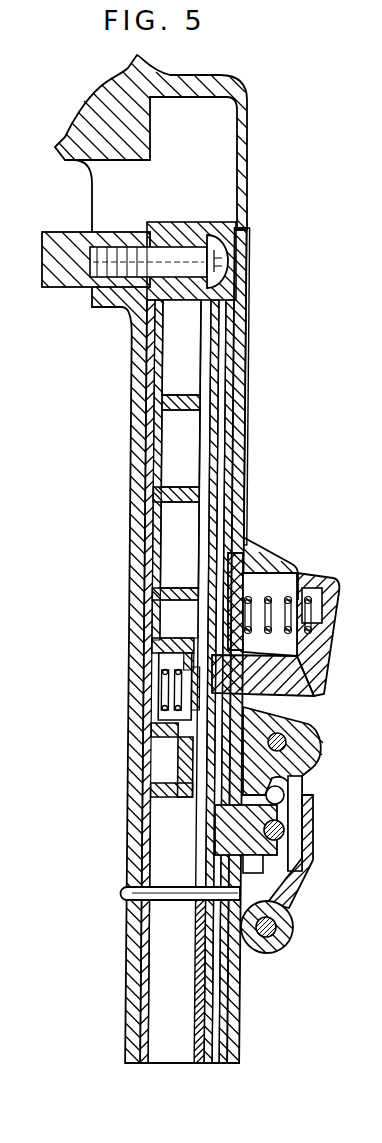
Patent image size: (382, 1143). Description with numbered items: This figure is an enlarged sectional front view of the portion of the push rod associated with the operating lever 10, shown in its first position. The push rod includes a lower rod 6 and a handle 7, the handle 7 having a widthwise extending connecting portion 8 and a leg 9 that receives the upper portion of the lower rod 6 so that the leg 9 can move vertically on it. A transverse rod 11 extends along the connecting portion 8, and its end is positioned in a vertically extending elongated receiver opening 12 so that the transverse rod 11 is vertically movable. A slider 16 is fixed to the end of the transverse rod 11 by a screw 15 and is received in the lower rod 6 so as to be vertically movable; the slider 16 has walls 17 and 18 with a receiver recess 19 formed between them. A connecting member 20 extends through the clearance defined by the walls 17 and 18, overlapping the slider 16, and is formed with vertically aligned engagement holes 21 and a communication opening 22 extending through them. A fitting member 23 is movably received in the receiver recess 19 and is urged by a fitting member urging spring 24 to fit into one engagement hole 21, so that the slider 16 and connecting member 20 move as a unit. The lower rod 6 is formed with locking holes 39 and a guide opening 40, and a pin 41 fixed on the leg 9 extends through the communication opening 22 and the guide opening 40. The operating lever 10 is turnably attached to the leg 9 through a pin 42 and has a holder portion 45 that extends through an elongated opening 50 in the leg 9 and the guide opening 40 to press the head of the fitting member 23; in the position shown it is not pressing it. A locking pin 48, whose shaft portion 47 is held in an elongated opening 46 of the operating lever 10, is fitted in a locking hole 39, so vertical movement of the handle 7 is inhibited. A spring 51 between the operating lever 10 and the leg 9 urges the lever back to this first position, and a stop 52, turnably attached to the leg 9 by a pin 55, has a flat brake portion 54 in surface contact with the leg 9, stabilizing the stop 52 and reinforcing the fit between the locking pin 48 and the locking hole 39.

The lower rod 6 is at (136, 962).
The handle 7 is at (262, 169).
The widthwise extending connecting portion 8 is at (56, 150).
The leg 9 is at (246, 432).
The operating lever 10 is at (319, 713).
The transverse rod 11 is at (64, 289).
The receiver opening 12 is at (103, 192).
The screw 15 is at (180, 256).
The slider 16 is at (165, 400).
The wall 17 is at (238, 612).
The wall 18 is at (190, 767).
The receiver recess 19 is at (160, 718).
The connecting member 20 is at (230, 328).
The engagement hole 21 is at (172, 468).
The communication opening 22 is at (203, 520).
The fitting member 23 is at (182, 658).
The fitting member urging spring 24 is at (165, 686).
The locking hole 39 is at (248, 396).
The guide opening 40 is at (225, 486).
The pin 41 is at (140, 903).
The pin 42 is at (286, 751).
The holder portion 45 is at (322, 686).
The elongated opening 46 is at (303, 806).
The shaft portion 47 is at (303, 831).
The locking pin 48 is at (205, 826).
The elongated opening 50 is at (300, 640).
The spring 51 is at (297, 592).
The stop 52 is at (303, 898).
The brake portion 54 is at (248, 942).
The pin 55 is at (285, 945).